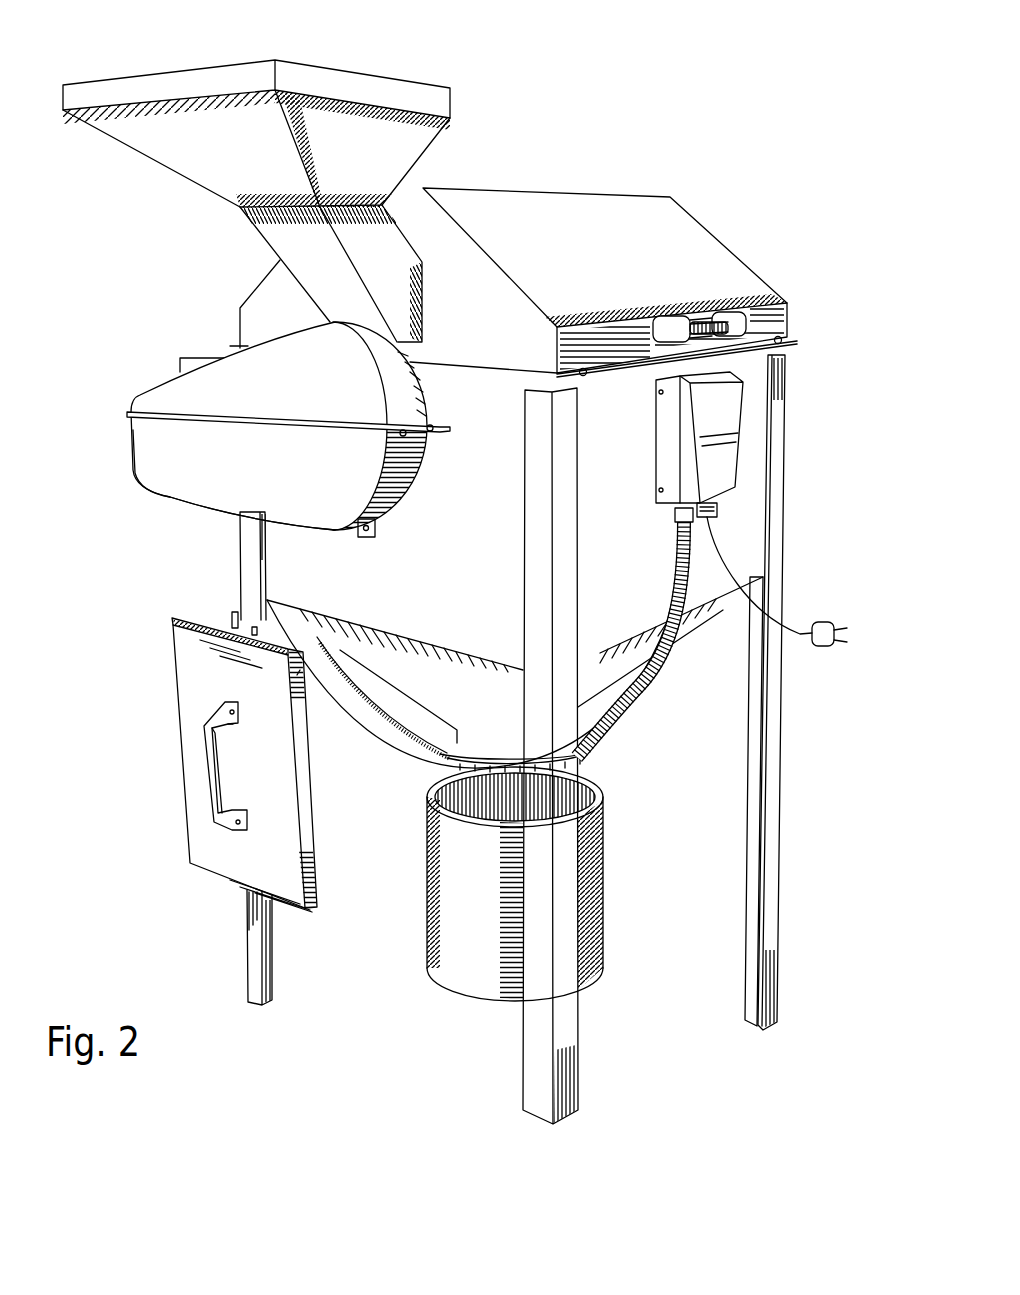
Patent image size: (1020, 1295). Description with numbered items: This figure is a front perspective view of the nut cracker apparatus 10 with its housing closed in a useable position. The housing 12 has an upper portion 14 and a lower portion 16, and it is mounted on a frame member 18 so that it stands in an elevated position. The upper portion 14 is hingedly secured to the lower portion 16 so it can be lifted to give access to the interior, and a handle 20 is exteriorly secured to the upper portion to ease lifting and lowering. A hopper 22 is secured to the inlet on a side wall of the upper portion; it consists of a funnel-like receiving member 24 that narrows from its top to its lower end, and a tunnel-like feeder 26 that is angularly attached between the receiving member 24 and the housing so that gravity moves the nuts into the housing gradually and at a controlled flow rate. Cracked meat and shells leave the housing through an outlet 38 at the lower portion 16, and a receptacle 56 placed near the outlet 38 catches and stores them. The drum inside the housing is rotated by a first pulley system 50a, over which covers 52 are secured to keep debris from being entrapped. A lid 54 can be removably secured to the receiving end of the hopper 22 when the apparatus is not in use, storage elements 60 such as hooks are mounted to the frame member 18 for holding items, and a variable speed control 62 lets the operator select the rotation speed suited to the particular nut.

The nut cracker apparatus 10 is at (830, 74).
The housing 12 is at (748, 520).
The upper portion 14 is at (710, 243).
The lower portion 16 is at (622, 675).
The frame member 18 is at (778, 704).
The handle 20 is at (705, 322).
The hopper 22 is at (122, 70).
The receiving member 24 is at (163, 148).
The feeder 26 is at (273, 237).
The outlet 38 is at (463, 738).
The first pulley system 50a is at (240, 386).
The covers 52 is at (138, 478).
The lid 54 is at (203, 853).
The receptacle 56 is at (463, 982).
The storage elements 60 is at (230, 618).
The variable speed control 62 is at (740, 395).